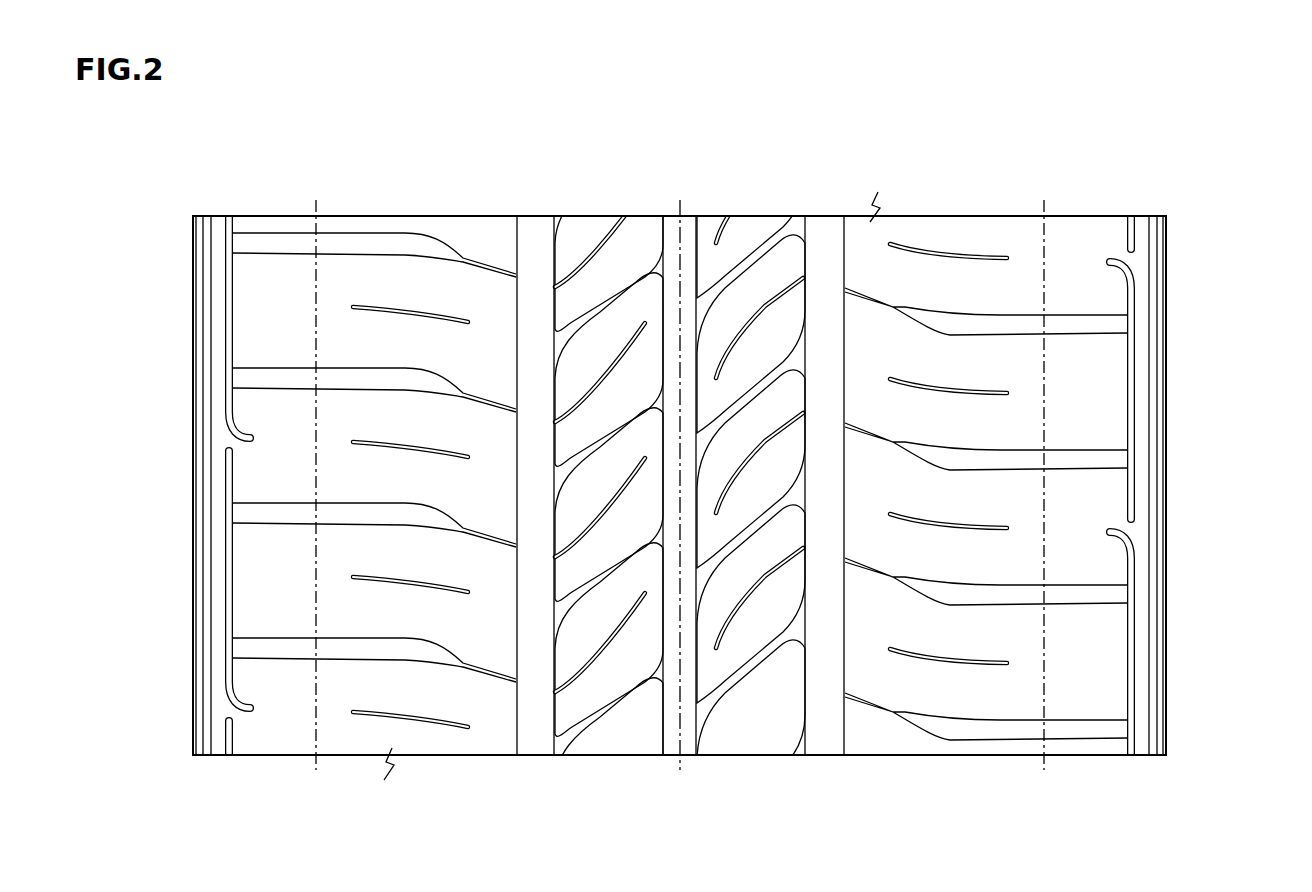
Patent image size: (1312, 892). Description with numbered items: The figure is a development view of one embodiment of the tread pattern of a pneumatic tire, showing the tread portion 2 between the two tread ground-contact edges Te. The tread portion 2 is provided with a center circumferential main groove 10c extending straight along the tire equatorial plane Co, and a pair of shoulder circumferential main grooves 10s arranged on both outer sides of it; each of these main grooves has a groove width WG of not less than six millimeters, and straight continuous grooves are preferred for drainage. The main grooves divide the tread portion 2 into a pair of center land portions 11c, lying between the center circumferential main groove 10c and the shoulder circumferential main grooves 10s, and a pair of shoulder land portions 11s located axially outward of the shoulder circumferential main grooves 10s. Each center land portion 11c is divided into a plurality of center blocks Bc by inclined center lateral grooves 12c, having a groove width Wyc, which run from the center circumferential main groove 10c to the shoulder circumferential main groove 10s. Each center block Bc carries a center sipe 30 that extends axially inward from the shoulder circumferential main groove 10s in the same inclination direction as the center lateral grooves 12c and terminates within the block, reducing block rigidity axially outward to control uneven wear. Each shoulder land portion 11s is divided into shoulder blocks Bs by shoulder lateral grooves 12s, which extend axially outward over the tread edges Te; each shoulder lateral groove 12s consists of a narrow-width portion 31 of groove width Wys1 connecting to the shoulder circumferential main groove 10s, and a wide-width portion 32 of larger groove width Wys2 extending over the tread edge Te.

The tread portion 2 is at (1003, 186).
The tread edge Te is at (313, 207).
The tire equatorial plane Co is at (678, 473).
The shoulder circumferential main groove 10s is at (535, 216).
The center circumferential main groove 10c is at (697, 216).
The shoulder land portion 11s is at (750, 484).
The center land portion 11c is at (681, 485).
The shoulder lateral groove 12s is at (680, 549).
The center lateral groove 12c is at (680, 485).
The center block Bc is at (605, 376).
The shoulder block Bs is at (983, 511).
The groove width of center lateral groove Wyc is at (763, 440).
The groove width of circumferential main groove WG is at (588, 713).
The center sipe 30 is at (759, 395).
The narrow-width portion 31 is at (882, 713).
The wide-width portion 32 is at (988, 738).
The groove width of narrow-width portion Wys1 is at (860, 606).
The groove width of wide-width portion Wys2 is at (992, 553).